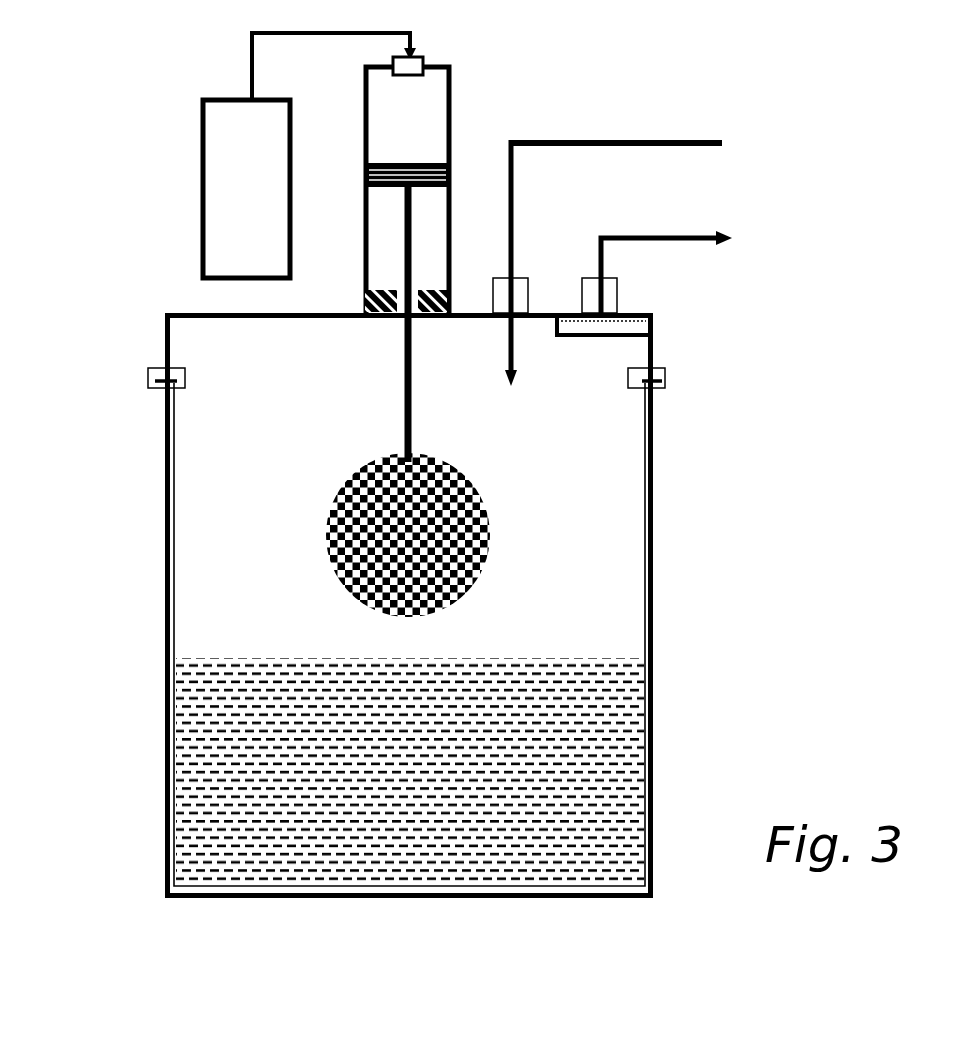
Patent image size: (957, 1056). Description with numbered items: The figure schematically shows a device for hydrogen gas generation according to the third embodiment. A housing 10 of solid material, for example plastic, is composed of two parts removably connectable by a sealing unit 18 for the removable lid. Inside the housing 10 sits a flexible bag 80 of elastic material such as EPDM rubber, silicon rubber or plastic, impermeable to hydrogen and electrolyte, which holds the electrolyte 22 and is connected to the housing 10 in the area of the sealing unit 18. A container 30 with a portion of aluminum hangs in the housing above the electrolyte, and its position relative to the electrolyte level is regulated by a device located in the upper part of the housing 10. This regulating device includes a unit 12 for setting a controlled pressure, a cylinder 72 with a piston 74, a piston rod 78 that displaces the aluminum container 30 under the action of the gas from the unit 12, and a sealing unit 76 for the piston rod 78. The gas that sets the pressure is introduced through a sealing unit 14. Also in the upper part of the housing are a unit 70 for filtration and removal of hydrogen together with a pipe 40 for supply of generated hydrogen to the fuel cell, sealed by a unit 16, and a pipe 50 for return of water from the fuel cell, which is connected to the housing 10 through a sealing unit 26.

The housing 10 is at (165, 412).
The unit for setting controlling pressure 12 is at (217, 208).
The unit for sealing introduction of gas 14 is at (420, 60).
The unit for sealing a pipe for supply of generated hydrogen 16 is at (608, 293).
The unit for sealing a removable lid 18 is at (148, 378).
The electrolyte 22 is at (318, 757).
The unit for sealing a pipe for return of water 26 is at (523, 278).
The container with a portion of aluminum 30 is at (320, 533).
The pipe for supply of generated hydrogen 40 is at (707, 233).
The pipe for return of water 50 is at (688, 137).
The unit for removal of hydrogen 70 is at (576, 335).
The cylinder 72 is at (362, 90).
The piston 74 is at (378, 188).
The unit for sealing the container with aluminum 76 is at (373, 316).
The piston rod 78 is at (403, 418).
The flexible bag 80 is at (612, 550).